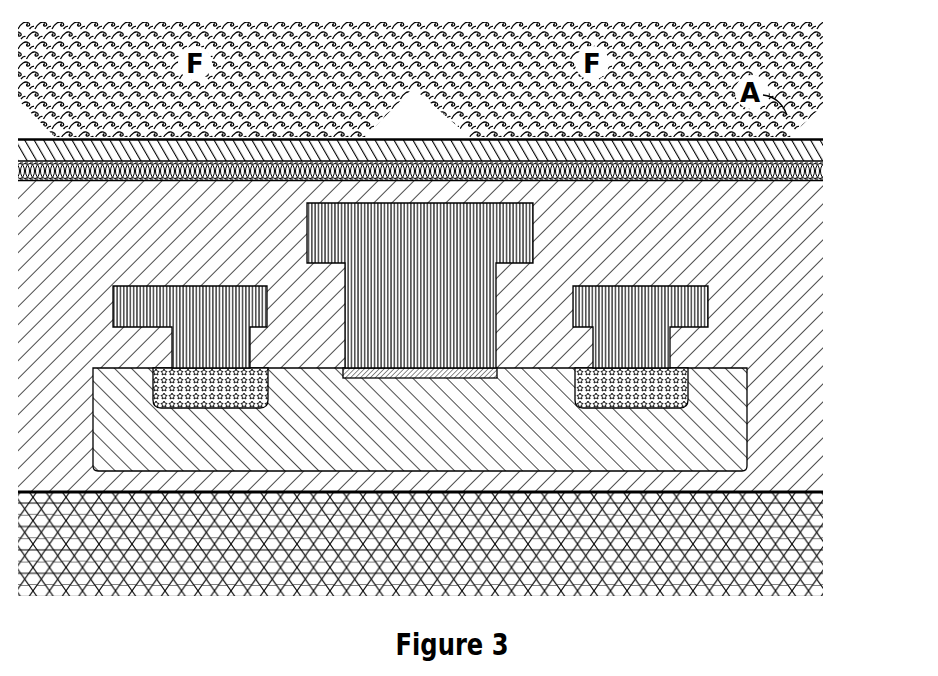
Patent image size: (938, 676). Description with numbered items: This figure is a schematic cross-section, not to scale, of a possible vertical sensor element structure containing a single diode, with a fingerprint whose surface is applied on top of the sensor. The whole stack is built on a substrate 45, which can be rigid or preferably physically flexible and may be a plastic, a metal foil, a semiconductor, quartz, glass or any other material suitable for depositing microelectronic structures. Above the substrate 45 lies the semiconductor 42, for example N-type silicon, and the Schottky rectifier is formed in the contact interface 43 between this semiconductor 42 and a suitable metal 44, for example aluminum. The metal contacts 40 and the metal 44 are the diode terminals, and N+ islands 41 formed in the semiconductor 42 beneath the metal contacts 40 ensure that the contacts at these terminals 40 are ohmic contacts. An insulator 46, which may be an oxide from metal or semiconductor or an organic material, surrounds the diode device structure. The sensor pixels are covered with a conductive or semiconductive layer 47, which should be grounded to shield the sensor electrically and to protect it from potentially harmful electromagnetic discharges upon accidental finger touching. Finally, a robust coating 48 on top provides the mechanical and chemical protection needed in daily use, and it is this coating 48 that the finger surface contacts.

The metal contact 40 is at (410, 327).
The N+ island 41 is at (420, 388).
The semiconductor 42 is at (420, 419).
The contact interface 43 is at (475, 378).
The metal 44 is at (420, 285).
The substrate 45 is at (793, 527).
The insulator 46 is at (788, 275).
The conductive/semiconductive layer 47 is at (823, 168).
The robust coating 48 is at (823, 152).